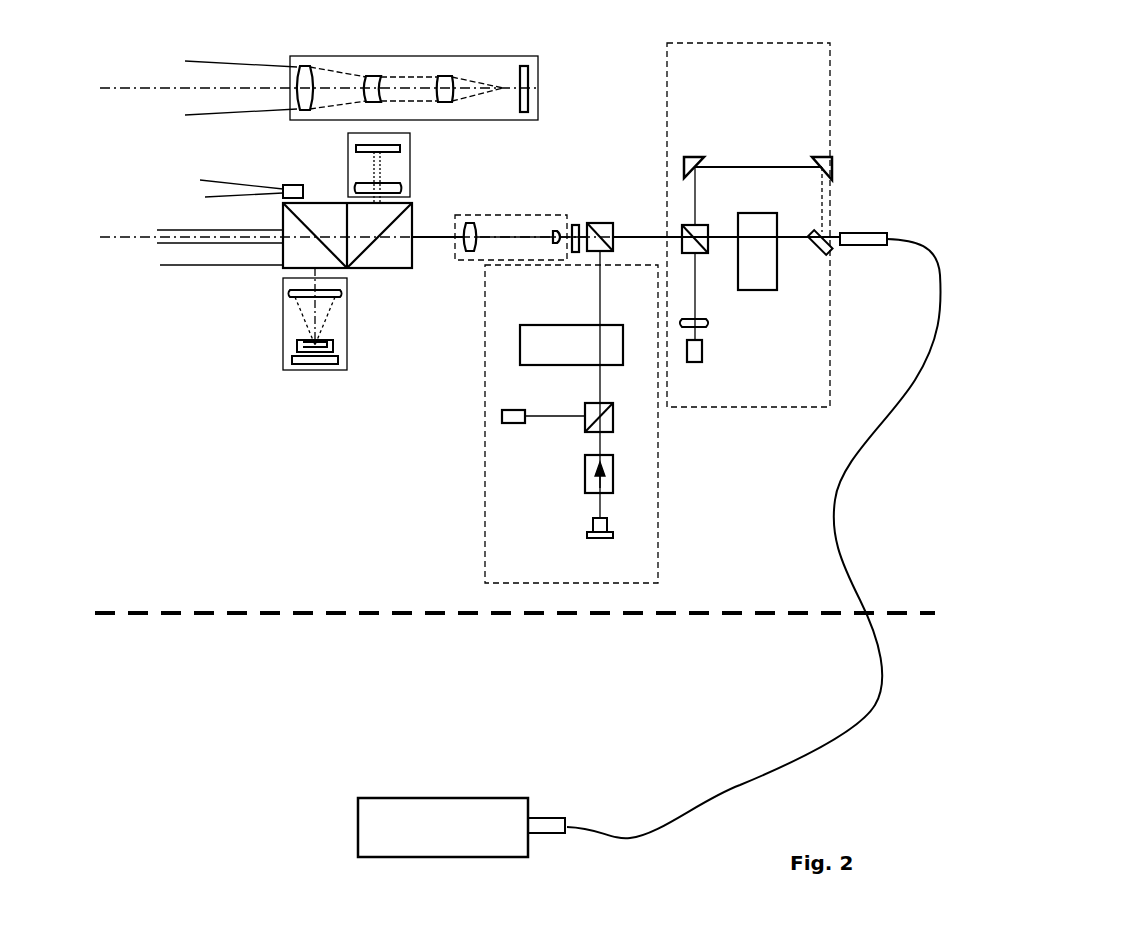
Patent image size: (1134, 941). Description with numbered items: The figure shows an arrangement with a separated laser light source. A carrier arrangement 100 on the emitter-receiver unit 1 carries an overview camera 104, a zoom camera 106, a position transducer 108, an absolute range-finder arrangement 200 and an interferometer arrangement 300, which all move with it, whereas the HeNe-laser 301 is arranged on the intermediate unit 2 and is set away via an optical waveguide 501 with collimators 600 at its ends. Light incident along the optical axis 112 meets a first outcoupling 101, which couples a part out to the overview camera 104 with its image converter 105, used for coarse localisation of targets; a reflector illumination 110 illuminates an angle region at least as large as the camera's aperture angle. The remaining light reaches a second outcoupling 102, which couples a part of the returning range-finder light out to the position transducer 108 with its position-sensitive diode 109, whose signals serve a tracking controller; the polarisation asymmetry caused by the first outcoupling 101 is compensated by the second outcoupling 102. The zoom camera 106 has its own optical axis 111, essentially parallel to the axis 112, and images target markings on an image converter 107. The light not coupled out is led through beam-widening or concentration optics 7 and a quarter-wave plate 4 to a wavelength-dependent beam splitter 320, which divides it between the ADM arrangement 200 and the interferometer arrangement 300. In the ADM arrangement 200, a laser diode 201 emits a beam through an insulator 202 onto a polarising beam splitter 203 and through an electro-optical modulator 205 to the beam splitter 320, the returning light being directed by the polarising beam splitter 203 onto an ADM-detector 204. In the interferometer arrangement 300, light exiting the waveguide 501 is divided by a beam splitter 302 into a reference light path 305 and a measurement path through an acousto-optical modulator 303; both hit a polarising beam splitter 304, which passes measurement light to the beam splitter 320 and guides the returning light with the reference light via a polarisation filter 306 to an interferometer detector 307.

The emitter-receiver unit 1 is at (162, 571).
The intermediate unit 2 is at (162, 671).
The quarter-wave plate 4 is at (575, 223).
The beam-widening or concentration optics 7 is at (522, 222).
The carrier arrangement 100 is at (283, 496).
The first outcoupling 101 is at (311, 204).
The second outcoupling 102 is at (390, 266).
The overview camera 104 is at (283, 306).
The image converter 105 is at (295, 368).
The zoom camera 106 is at (456, 58).
The image converter 107 is at (530, 80).
The position transducer 108 is at (412, 176).
The position-sensitive diode 109 is at (410, 142).
The reflector illumination 110 is at (292, 184).
The optical axis of the zoom camera 111 is at (140, 78).
The optical axis of the range-finder 112 is at (130, 232).
The absolute range-finder (ADM) arrangement 200 is at (535, 297).
The laser diode 201 is at (592, 528).
The insulator 202 is at (583, 470).
The polarising beam splitter 203 is at (613, 422).
The ADM-detector 204 is at (502, 416).
The electro-optical modulator 205 is at (518, 346).
The interferometer arrangement 300 is at (815, 81).
The HeNe-laser 301 is at (520, 798).
The beam splitter 302 is at (828, 236).
The acousto-optical modulator 303 is at (776, 284).
The polarising beam splitter 304 is at (704, 226).
The reference light path 305 is at (732, 168).
The polarisation filter 306 is at (708, 323).
The interferometer detector 307 is at (704, 354).
The wavelength-dependent beam splitter 320 is at (608, 223).
The optical waveguide 501 is at (834, 534).
The collimator 600 is at (864, 247).